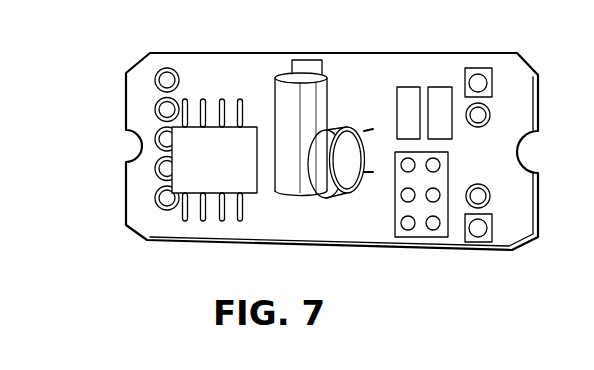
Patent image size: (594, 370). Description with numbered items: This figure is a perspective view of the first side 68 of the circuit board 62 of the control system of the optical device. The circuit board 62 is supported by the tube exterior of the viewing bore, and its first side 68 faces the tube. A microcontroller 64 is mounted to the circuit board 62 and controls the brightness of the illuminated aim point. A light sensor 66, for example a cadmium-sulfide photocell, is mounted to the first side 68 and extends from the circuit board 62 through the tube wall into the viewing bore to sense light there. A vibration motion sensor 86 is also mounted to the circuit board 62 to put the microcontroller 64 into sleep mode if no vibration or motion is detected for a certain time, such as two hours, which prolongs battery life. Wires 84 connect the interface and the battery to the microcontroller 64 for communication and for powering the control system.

The circuit board 62 is at (423, 52).
The microcontroller 64 is at (214, 160).
The light sensor 66 is at (343, 143).
The first side 68 is at (517, 78).
The wires 84 is at (212, 97).
The vibration motion sensor 86 is at (289, 90).